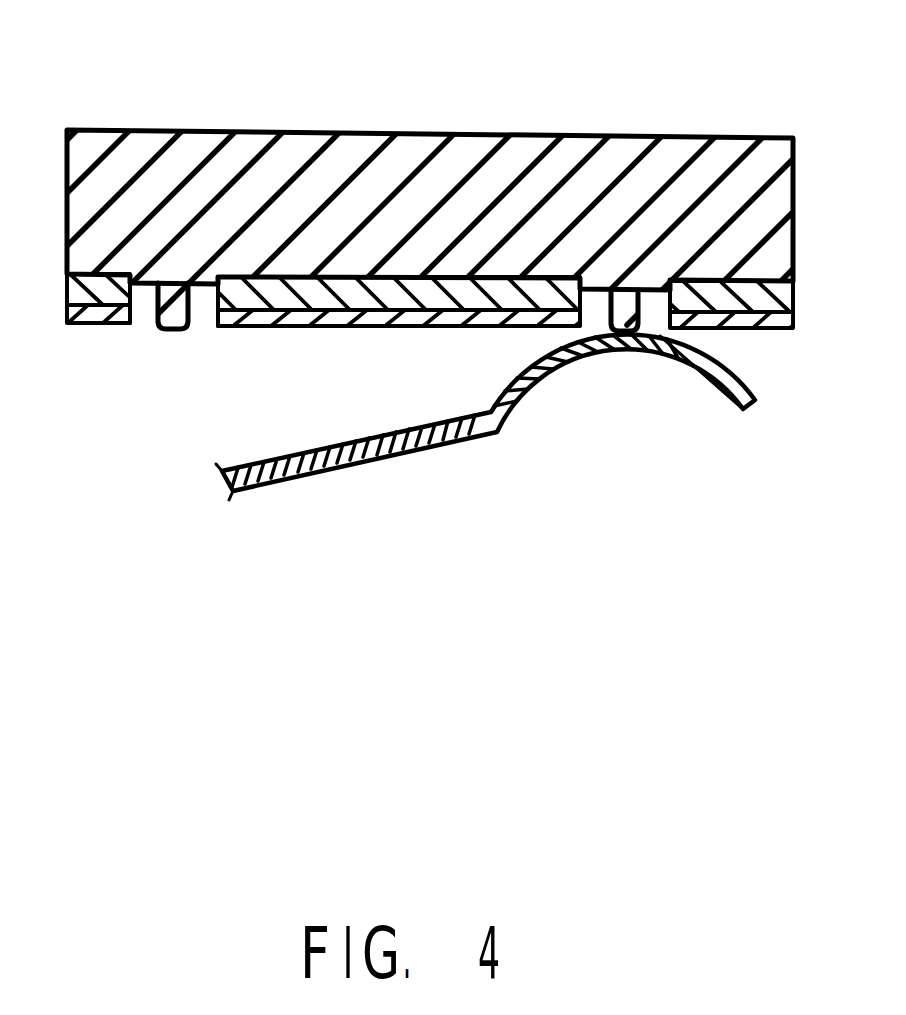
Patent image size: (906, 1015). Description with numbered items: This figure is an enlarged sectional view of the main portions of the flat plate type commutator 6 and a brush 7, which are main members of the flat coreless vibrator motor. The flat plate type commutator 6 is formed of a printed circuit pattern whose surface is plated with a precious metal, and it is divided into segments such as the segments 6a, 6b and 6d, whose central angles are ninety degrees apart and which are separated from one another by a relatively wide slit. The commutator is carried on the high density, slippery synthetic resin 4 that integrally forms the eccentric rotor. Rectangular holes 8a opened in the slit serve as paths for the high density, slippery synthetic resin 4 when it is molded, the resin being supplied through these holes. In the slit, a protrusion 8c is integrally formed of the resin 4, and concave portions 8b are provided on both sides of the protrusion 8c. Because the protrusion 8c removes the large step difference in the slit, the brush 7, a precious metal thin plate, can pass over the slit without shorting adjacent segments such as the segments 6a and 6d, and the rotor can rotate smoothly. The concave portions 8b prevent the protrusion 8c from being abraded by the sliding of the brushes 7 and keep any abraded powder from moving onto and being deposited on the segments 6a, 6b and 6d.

The high density, slippery synthetic resin 4 is at (528, 158).
The flat plate type commutator 6 is at (450, 232).
The segment 6a is at (293, 324).
The segment 6b is at (84, 326).
The segment 6d is at (754, 351).
The brush 7 is at (332, 471).
The rectangular hole 8a is at (627, 324).
The concave portion 8b is at (140, 312).
The protrusion 8c is at (175, 333).